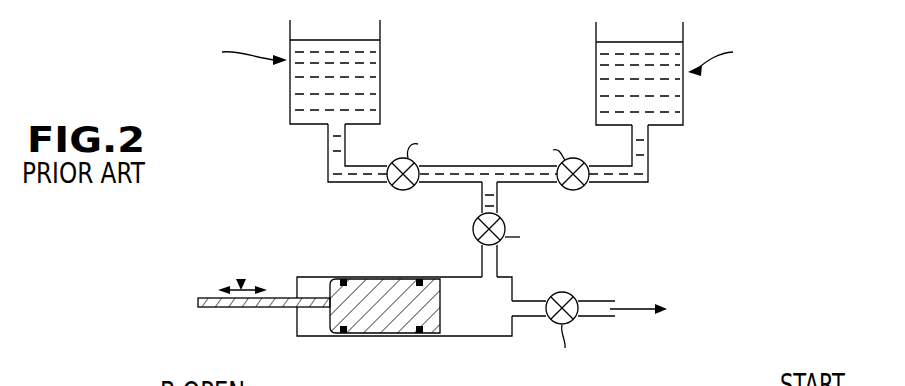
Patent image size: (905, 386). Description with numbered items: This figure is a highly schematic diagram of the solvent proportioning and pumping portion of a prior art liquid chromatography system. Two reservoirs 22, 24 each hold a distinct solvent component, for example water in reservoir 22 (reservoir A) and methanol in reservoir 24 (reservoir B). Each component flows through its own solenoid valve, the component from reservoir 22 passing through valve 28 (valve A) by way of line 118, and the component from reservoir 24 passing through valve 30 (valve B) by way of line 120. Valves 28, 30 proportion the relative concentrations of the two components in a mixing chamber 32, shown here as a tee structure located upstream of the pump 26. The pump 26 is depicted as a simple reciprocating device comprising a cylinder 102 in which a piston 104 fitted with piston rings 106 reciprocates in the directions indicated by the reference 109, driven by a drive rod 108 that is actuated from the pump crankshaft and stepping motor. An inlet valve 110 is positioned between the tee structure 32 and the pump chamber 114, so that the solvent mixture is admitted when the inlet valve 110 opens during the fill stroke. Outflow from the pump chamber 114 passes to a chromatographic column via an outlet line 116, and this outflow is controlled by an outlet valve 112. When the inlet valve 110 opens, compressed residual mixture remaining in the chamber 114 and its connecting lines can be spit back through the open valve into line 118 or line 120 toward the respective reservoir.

The reservoir 22 is at (381, 55).
The reservoir 24 is at (596, 62).
The line 118 is at (328, 153).
The line 120 is at (648, 158).
The valve 28 is at (403, 190).
The valve 30 is at (583, 190).
The mixing chamber 32 is at (482, 205).
The inlet valve 110 is at (473, 236).
The pump 26 is at (349, 296).
The cylinder 102 is at (462, 337).
The piston 104 is at (383, 318).
The piston rings 106 is at (418, 279).
The drive rod 108 is at (232, 309).
The directions of reciprocation 109 is at (240, 281).
The pump chamber 114 is at (490, 323).
The outlet valve 112 is at (562, 292).
The outlet line 116 is at (610, 301).